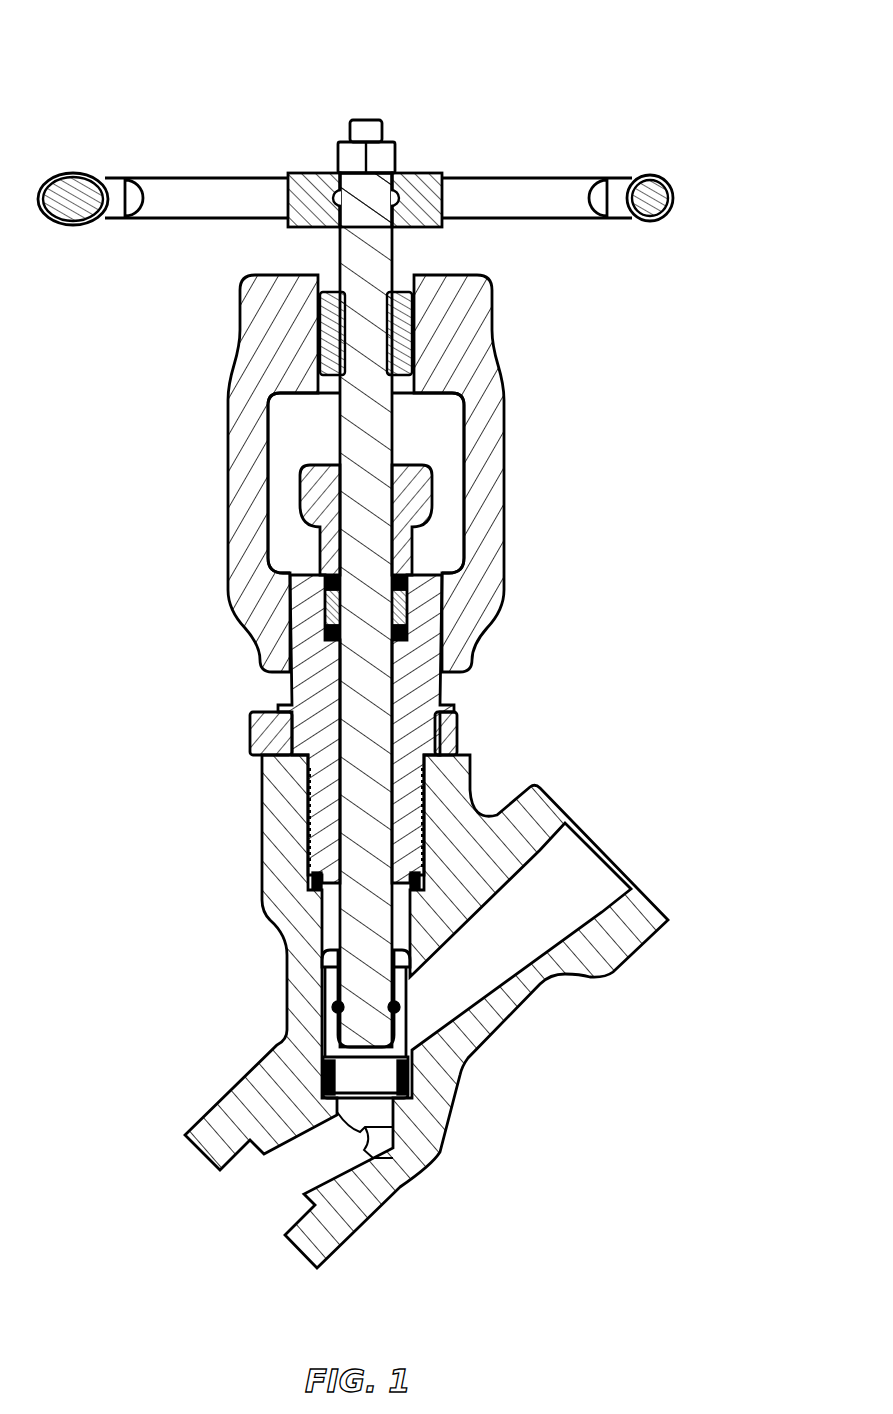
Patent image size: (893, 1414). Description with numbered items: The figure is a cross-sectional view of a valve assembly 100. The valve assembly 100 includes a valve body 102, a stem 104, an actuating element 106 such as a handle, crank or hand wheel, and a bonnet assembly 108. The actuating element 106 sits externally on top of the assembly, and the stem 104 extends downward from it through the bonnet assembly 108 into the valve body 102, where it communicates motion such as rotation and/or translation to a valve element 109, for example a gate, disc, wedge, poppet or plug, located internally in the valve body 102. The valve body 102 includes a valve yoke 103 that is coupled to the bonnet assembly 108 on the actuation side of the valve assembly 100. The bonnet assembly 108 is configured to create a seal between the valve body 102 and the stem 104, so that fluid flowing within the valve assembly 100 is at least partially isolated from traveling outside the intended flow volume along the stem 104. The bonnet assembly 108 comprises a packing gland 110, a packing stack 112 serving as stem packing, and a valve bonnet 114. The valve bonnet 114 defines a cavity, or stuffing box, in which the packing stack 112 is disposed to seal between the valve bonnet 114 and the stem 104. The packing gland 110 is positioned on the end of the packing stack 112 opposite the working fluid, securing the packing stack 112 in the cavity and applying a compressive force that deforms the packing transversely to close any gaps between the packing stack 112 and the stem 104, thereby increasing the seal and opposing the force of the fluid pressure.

The valve assembly 100 is at (628, 146).
The valve body 102 is at (533, 807).
The valve yoke 103 is at (480, 408).
The stem 104 is at (368, 362).
The actuating element 106 is at (420, 185).
The bonnet assembly 108 is at (280, 530).
The valve element 109 is at (357, 1077).
The packing gland 110 is at (415, 503).
The packing stack 112 is at (410, 610).
The valve bonnet 114 is at (290, 698).